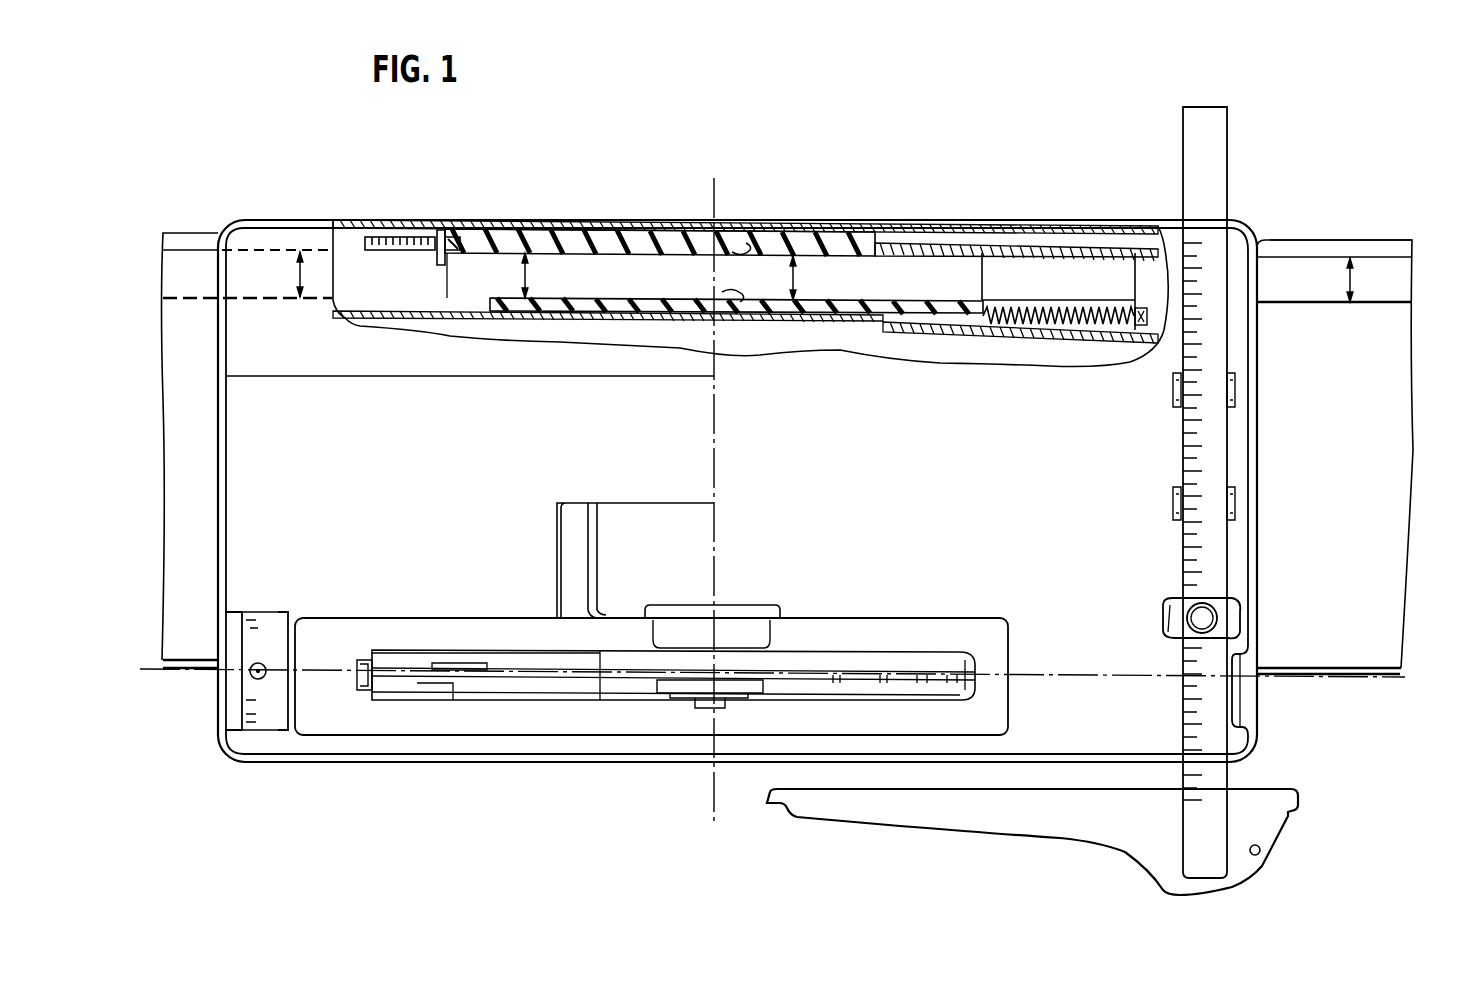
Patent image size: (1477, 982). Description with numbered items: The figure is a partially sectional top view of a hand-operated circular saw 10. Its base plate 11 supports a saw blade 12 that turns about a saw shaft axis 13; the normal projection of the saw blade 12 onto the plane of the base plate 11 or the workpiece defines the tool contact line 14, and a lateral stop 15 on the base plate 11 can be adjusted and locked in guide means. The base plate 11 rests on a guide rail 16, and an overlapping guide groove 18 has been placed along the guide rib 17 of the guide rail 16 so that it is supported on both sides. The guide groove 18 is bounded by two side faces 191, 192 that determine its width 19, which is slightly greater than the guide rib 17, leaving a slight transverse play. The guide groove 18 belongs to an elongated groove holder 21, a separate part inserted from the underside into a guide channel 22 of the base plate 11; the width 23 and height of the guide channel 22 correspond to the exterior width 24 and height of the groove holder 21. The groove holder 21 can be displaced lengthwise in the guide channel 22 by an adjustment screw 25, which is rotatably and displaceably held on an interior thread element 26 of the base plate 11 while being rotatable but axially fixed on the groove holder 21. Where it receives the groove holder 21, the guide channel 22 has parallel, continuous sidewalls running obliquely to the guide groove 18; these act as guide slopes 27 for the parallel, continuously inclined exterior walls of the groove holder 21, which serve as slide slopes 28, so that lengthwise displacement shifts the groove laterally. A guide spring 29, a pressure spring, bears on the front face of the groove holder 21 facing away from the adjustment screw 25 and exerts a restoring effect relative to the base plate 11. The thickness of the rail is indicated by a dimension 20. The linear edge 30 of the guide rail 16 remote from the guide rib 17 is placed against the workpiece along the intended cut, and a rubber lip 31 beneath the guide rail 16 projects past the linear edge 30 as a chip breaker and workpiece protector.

The hand-operated circular saw 10 is at (852, 187).
The base plate 11 is at (380, 750).
The saw blade 12 is at (875, 665).
The saw shaft axis 13 is at (710, 795).
The tool contact line 14 is at (1080, 672).
The lateral stop 15 is at (1040, 820).
The guide rail 16 is at (1405, 597).
The guide rib 17 is at (1382, 268).
The guide groove 18 is at (968, 265).
The width of the guide groove 19 is at (797, 275).
The side face 191 is at (735, 292).
The side face 192 is at (755, 240).
The arm thickness dimension 20 is at (1340, 272).
The groove holder 21 is at (505, 233).
The guide channel 22 is at (258, 245).
The width of the guide channel 23 is at (300, 278).
The exterior width of the groove holder 24 is at (528, 272).
The adjustment screw 25 is at (378, 236).
The interior thread element 26 is at (452, 240).
The guide slopes 27 is at (660, 225).
The slide slopes 28 is at (905, 243).
The guide spring 29 is at (1073, 326).
The linear edge 30 is at (1320, 677).
The rubber lip 31 is at (190, 672).